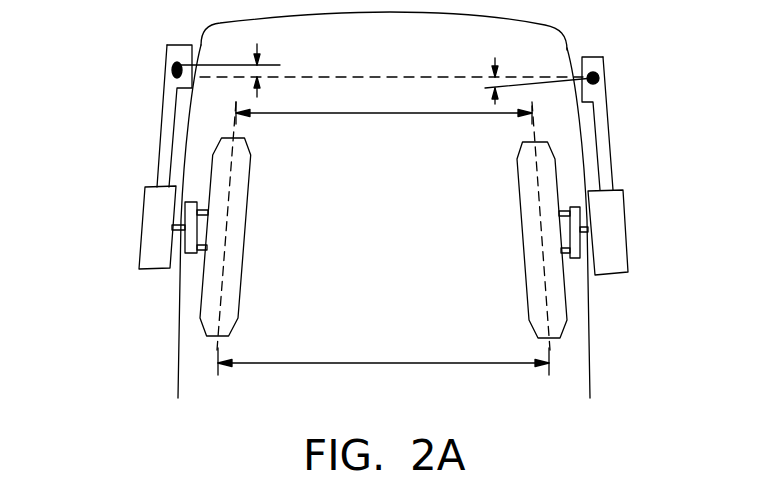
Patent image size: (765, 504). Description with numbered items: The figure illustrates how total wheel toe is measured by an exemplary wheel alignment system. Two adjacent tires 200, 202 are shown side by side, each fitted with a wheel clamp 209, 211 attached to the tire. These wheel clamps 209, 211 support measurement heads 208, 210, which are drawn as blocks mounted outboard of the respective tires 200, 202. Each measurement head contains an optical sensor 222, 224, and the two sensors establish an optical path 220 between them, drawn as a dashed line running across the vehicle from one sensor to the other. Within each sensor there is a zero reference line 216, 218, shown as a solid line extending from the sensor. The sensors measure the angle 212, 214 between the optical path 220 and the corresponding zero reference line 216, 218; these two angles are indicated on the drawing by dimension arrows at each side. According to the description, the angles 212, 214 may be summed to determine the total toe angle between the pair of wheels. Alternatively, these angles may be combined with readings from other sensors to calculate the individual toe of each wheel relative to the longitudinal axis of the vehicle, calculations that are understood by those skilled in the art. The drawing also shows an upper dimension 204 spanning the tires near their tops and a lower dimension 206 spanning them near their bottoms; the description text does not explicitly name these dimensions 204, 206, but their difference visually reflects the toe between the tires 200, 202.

The tire 200 is at (252, 168).
The tire 202 is at (527, 273).
The upper track width dimension 204 is at (392, 115).
The lower track width dimension 206 is at (352, 363).
The measurement head 208 is at (142, 228).
The wheel clamp 209 is at (186, 254).
The measurement head 210 is at (622, 233).
The wheel clamp 211 is at (577, 259).
The angle 212 is at (261, 60).
The angle 214 is at (497, 65).
The zero reference line 216 is at (274, 65).
The zero reference line 218 is at (548, 86).
The optical path 220 is at (352, 77).
The optical sensor 222 is at (172, 70).
The optical sensor 224 is at (599, 77).